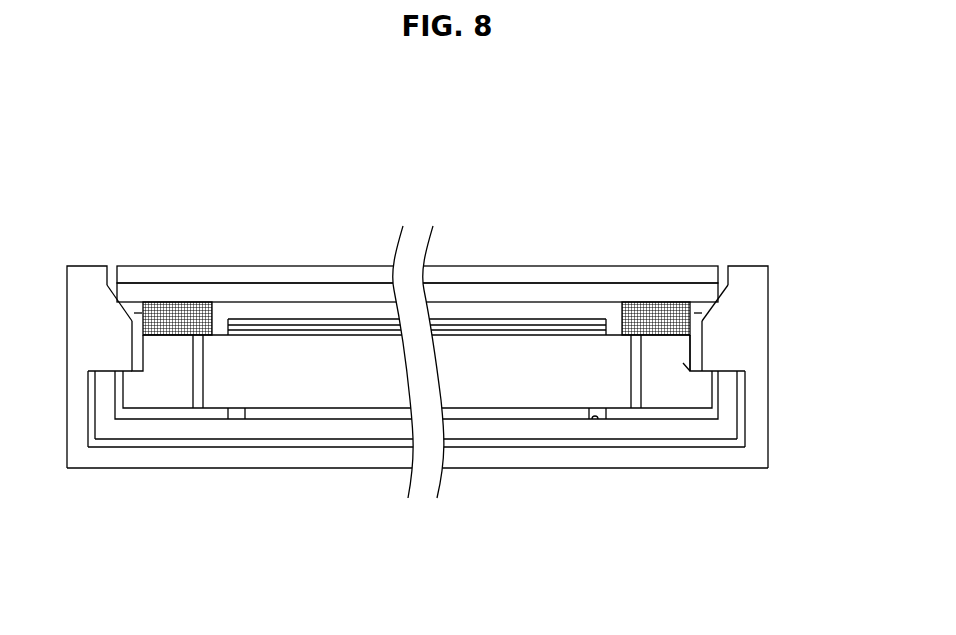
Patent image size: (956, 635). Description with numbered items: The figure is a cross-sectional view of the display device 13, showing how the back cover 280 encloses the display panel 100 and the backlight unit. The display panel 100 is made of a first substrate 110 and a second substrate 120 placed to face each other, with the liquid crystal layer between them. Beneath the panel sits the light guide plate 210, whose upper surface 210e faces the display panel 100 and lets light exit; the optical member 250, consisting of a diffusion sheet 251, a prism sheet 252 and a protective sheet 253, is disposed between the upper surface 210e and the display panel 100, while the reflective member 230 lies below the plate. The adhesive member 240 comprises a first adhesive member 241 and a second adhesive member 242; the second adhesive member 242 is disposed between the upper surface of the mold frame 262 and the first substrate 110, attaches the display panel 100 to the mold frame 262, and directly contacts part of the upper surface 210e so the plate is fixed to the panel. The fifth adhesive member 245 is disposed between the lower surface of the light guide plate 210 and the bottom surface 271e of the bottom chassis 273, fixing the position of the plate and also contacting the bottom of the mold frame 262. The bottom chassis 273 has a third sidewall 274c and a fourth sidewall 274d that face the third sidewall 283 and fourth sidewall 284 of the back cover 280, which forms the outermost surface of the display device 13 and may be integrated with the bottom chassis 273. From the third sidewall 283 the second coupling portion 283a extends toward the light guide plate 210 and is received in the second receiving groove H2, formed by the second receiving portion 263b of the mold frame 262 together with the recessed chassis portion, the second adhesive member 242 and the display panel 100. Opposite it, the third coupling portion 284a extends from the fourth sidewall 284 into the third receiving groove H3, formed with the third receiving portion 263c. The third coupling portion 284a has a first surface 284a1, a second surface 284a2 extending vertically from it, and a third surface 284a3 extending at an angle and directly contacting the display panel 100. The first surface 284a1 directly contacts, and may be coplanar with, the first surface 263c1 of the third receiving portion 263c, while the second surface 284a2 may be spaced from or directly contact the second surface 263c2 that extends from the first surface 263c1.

The display device 13 is at (151, 162).
The display panel 100 is at (710, 218).
The first substrate 110 is at (685, 293).
The second substrate 120 is at (662, 273).
The second receiving groove H2 is at (138, 313).
The third receiving groove H3 is at (698, 313).
The light guide plate 210 is at (273, 395).
The upper surface 210e is at (480, 337).
The reflective member 230 is at (318, 413).
The adhesive member 240 is at (318, 106).
The first adhesive member 241 is at (188, 307).
The second adhesive member 242 is at (652, 315).
The fifth adhesive member 245 is at (617, 413).
The optical member 250 is at (453, 192).
The diffusion sheet 251 is at (467, 322).
The prism sheet 252 is at (502, 328).
The protective sheet 253 is at (523, 333).
The mold frame 262 is at (165, 378).
The second receiving portion 263b is at (138, 373).
The third receiving portion 263c is at (605, 552).
The first surface 263c1 is at (690, 372).
The second surface 263c2 is at (683, 363).
The bottom surface 271e is at (595, 418).
The bottom chassis 273 is at (720, 435).
The third sidewall 274c is at (92, 406).
The fourth sidewall 274d is at (739, 394).
The back cover 280 is at (528, 460).
The third sidewall 283 is at (65, 350).
The second coupling portion 283a is at (125, 318).
The fourth sidewall 284 is at (772, 281).
The third coupling portion 284a is at (828, 299).
The first surface 284a1 is at (712, 370).
The second surface 284a2 is at (703, 340).
The third surface 284a3 is at (709, 312).